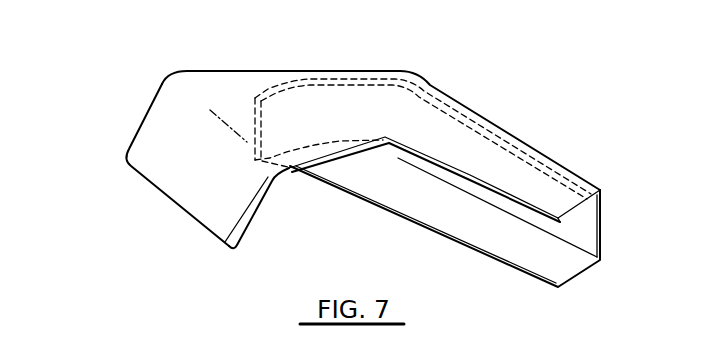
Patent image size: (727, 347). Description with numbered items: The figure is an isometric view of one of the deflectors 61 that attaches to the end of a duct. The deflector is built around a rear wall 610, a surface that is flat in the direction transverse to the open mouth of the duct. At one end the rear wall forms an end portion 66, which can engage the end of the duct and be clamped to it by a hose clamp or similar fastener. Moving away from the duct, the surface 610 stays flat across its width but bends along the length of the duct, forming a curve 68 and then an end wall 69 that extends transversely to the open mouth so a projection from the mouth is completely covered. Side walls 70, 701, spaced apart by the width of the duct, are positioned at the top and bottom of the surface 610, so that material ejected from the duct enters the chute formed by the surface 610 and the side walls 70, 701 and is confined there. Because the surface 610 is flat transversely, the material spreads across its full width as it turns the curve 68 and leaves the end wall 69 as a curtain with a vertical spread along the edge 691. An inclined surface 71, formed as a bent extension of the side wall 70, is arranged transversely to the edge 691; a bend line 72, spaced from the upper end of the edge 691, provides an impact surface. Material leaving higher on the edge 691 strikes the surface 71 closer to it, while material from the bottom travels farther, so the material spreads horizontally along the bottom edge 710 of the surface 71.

The deflector 61 is at (129, 208).
The end portion 66 is at (602, 228).
The curve 68 is at (430, 125).
The end wall 69 is at (293, 113).
The side wall 70 is at (353, 94).
The inclined surface 71 is at (133, 146).
The bend line 72 is at (190, 93).
The rear wall 610 is at (473, 184).
The edge 691 is at (252, 146).
The side wall 701 is at (376, 185).
The bottom edge 710 is at (210, 235).